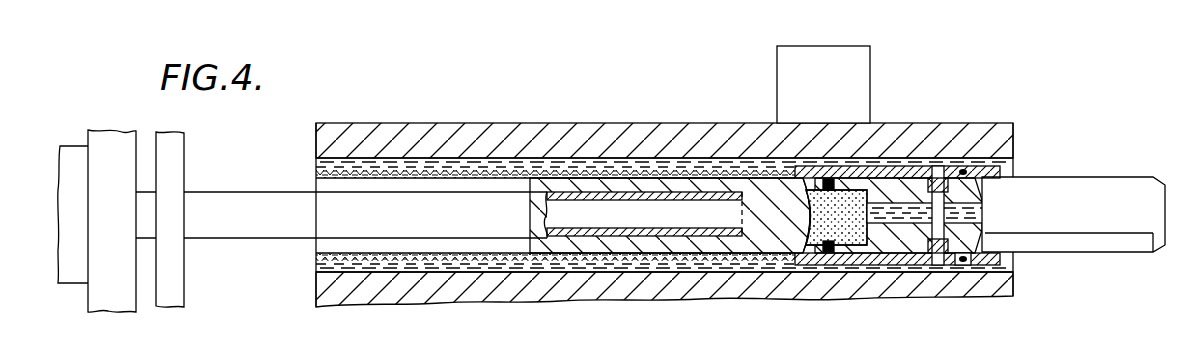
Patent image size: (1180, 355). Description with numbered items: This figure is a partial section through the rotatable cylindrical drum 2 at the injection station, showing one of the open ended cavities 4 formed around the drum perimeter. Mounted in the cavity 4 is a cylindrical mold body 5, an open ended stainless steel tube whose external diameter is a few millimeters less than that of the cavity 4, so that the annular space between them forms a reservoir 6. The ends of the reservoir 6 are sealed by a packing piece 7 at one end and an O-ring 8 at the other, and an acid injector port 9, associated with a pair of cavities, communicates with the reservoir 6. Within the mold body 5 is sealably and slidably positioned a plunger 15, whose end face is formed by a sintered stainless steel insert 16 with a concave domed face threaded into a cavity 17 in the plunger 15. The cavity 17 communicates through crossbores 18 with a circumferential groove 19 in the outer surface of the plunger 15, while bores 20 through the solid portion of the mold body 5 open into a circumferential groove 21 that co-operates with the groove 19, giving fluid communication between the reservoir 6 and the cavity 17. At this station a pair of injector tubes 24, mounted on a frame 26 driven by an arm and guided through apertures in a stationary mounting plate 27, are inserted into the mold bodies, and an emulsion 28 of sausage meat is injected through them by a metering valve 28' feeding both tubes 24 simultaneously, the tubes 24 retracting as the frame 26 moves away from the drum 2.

The cylindrical drum 2 is at (648, 199).
The cavity 4 is at (970, 146).
The mold body 5 is at (768, 264).
The reservoir 6 is at (436, 158).
The packing piece 7 is at (316, 168).
The O-ring 8 is at (1013, 273).
The acid injector port 9 is at (788, 78).
The plunger 15 is at (1070, 174).
The sintered stainless steel insert 16 is at (818, 234).
The cavity 17 is at (885, 236).
The crossbores 18 is at (937, 178).
The circumferential groove 19 is at (960, 262).
The bores 20 is at (834, 182).
The circumferential groove 21 is at (806, 182).
The injector tubes 24 is at (243, 225).
The frame 26 is at (110, 148).
The stationary mounting plate 27 is at (172, 292).
The emulsion 28 is at (670, 266).
The metering valve 28' is at (90, 250).